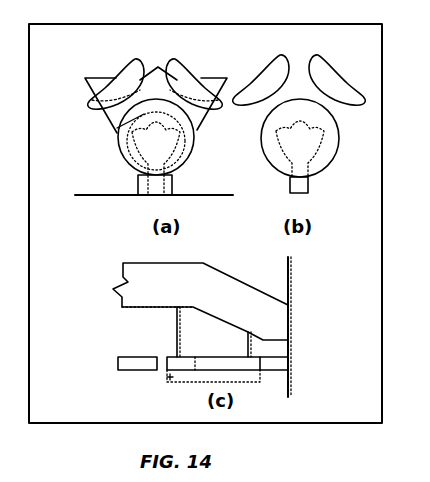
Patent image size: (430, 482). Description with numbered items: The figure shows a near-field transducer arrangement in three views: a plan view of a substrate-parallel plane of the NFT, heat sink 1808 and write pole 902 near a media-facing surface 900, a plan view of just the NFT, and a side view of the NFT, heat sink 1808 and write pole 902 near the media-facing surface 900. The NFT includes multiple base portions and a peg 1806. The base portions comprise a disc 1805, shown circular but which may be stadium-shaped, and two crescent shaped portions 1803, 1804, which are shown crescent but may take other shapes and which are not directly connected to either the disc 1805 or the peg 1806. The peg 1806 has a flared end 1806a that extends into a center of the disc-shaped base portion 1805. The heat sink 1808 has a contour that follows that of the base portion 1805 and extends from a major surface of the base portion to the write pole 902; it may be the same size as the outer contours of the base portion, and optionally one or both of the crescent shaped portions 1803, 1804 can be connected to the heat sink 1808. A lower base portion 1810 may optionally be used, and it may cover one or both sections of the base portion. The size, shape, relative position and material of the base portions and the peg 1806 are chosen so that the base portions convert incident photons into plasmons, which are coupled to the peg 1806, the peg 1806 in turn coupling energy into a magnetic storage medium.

The media-facing surface 900 is at (110, 196).
The write pole 902 is at (107, 77).
The crescent shaped portion 1803 is at (135, 58).
The crescent shaped portion 1804 is at (174, 58).
The disc 1805 is at (116, 147).
The peg 1806 is at (137, 180).
The flared end 1806a is at (280, 138).
The heat sink 1808 is at (117, 128).
The lower base portion 1810 is at (177, 382).